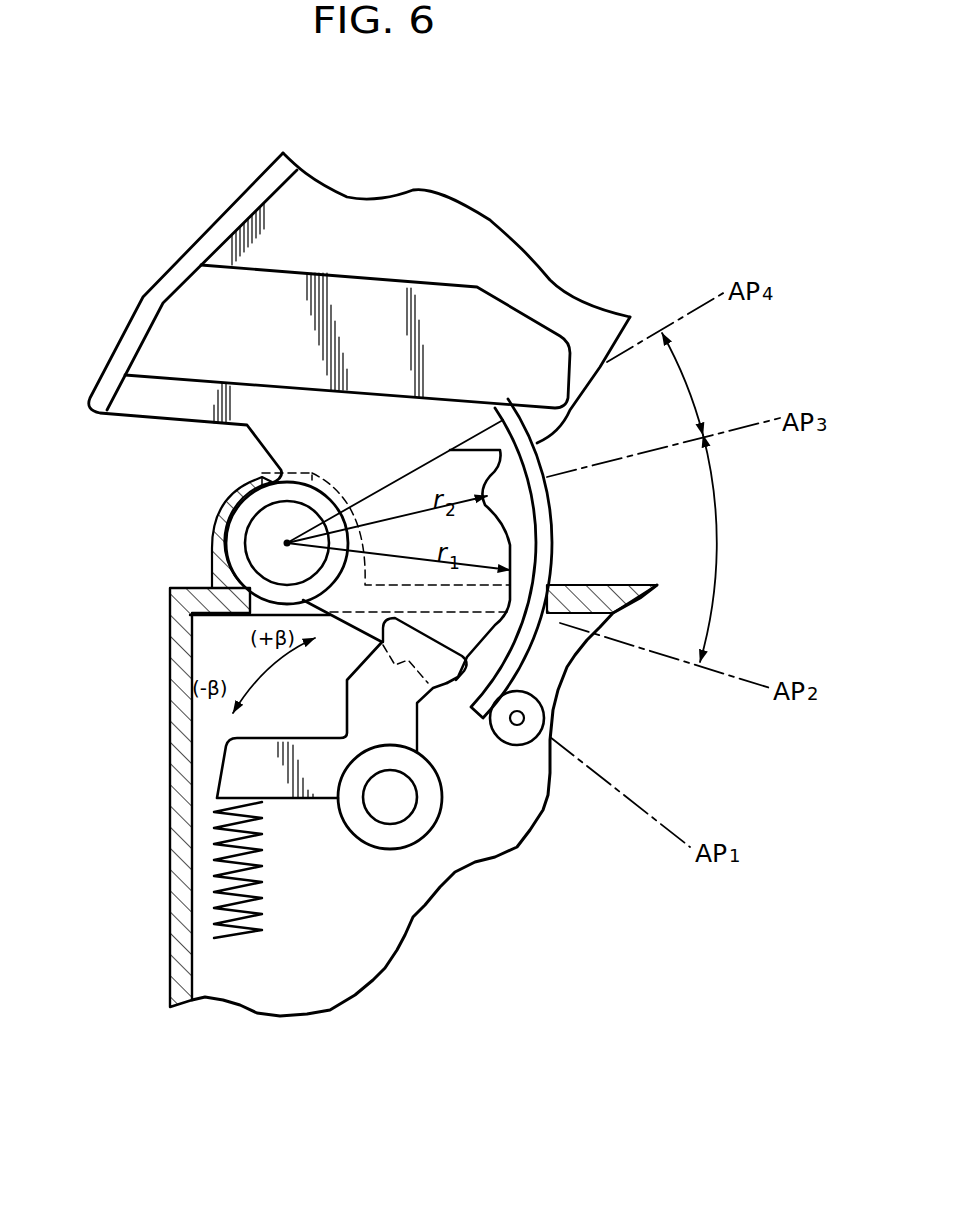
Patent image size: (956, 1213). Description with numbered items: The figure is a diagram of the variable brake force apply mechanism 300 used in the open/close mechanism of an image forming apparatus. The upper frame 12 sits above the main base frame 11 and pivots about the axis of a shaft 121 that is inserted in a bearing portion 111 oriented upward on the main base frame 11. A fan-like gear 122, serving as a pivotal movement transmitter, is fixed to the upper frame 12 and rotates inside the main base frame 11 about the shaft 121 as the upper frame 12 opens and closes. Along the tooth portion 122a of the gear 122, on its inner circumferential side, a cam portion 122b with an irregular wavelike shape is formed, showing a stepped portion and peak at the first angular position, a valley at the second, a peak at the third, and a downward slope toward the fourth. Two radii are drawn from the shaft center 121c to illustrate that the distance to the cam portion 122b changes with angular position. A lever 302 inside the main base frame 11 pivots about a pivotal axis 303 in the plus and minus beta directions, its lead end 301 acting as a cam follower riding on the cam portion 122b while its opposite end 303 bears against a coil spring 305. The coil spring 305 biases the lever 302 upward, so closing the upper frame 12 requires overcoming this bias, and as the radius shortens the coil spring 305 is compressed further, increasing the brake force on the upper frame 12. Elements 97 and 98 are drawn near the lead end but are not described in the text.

The upper frame 12 is at (457, 207).
The main base frame 11 is at (178, 933).
The bearing portion 111 is at (223, 567).
The shaft 121 is at (262, 528).
The shaft center 121c is at (285, 542).
The fan-like gear 122 is at (398, 495).
The tooth portion 122a is at (553, 533).
The cam portion 122b is at (462, 450).
The roller pin 97 is at (517, 725).
The roller 98 is at (500, 738).
The variable brake force apply mechanism 300 is at (553, 953).
The lead end 301 is at (432, 688).
The lever 302 is at (337, 748).
The pivotal axis 303 is at (384, 805).
The coil spring 305 is at (262, 929).